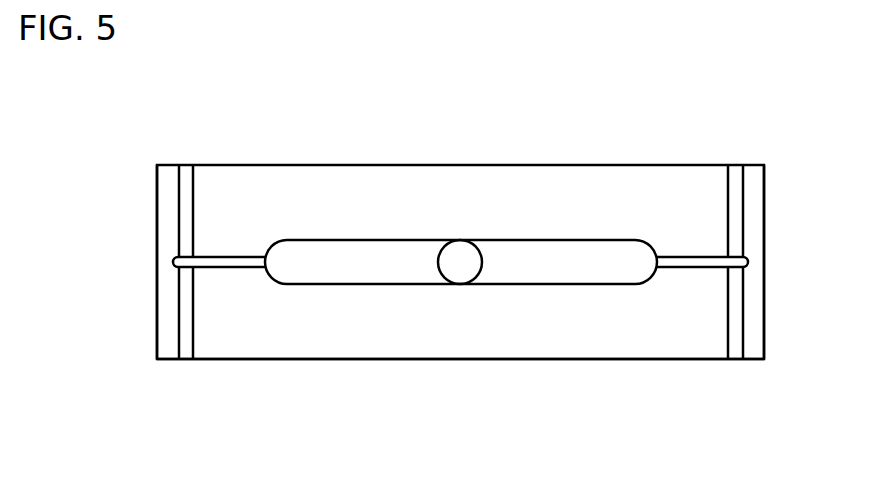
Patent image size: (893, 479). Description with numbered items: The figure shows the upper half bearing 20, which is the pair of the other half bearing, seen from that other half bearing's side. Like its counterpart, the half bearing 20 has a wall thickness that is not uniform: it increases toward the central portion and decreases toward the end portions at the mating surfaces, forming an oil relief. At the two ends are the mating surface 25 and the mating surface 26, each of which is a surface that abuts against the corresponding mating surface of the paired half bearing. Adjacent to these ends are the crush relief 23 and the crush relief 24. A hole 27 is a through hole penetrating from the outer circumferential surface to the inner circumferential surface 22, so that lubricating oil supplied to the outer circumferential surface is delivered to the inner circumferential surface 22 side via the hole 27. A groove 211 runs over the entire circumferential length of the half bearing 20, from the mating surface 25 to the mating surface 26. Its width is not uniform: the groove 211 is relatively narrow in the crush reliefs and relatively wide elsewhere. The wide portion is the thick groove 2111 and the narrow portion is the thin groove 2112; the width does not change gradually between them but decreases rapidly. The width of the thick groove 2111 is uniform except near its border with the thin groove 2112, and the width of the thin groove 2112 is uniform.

The half bearing 20 is at (530, 148).
The inner circumferential surface 22 is at (492, 338).
The crush relief 23 is at (736, 348).
The crush relief 24 is at (186, 347).
The mating surface 25 is at (754, 167).
The mating surface 26 is at (167, 167).
The hole 27 is at (465, 257).
The groove 211 is at (383, 122).
The thick groove 2111 is at (333, 245).
The thin groove 2112 is at (243, 262).